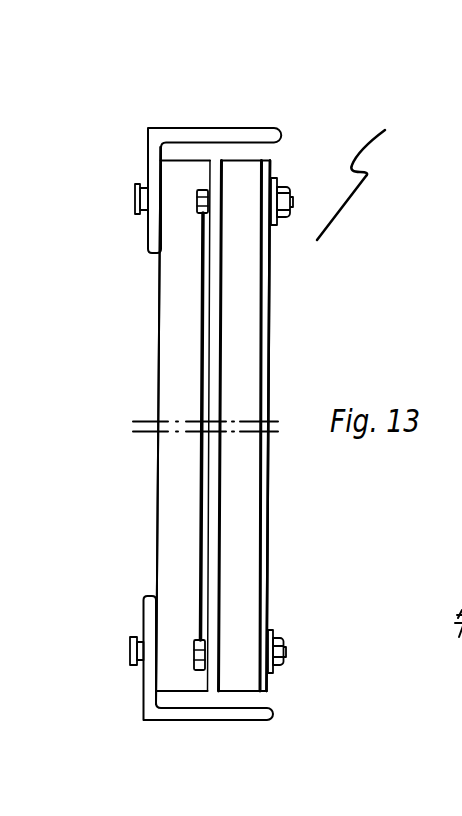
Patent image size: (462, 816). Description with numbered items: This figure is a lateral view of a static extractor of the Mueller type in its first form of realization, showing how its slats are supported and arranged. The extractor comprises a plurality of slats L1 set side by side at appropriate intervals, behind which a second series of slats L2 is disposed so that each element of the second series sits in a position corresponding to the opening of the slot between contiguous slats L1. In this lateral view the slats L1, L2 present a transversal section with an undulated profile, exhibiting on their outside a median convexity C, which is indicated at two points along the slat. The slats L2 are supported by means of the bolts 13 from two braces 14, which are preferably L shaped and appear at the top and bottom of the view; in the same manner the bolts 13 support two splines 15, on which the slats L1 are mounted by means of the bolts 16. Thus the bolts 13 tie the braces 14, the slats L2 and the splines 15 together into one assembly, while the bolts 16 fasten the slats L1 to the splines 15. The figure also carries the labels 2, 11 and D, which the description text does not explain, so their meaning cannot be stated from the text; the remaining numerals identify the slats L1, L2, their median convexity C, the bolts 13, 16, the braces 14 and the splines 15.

The frame side plate 2 is at (165, 467).
The mounting block 11 is at (245, 365).
The bolt 13 is at (135, 193).
The brace 14 is at (238, 133).
The spline 15 is at (205, 238).
The bolt 16 is at (203, 196).
The median convexity C is at (205, 297).
The direction D is at (361, 170).
The slat L1 is at (270, 550).
The slat L2 is at (158, 340).